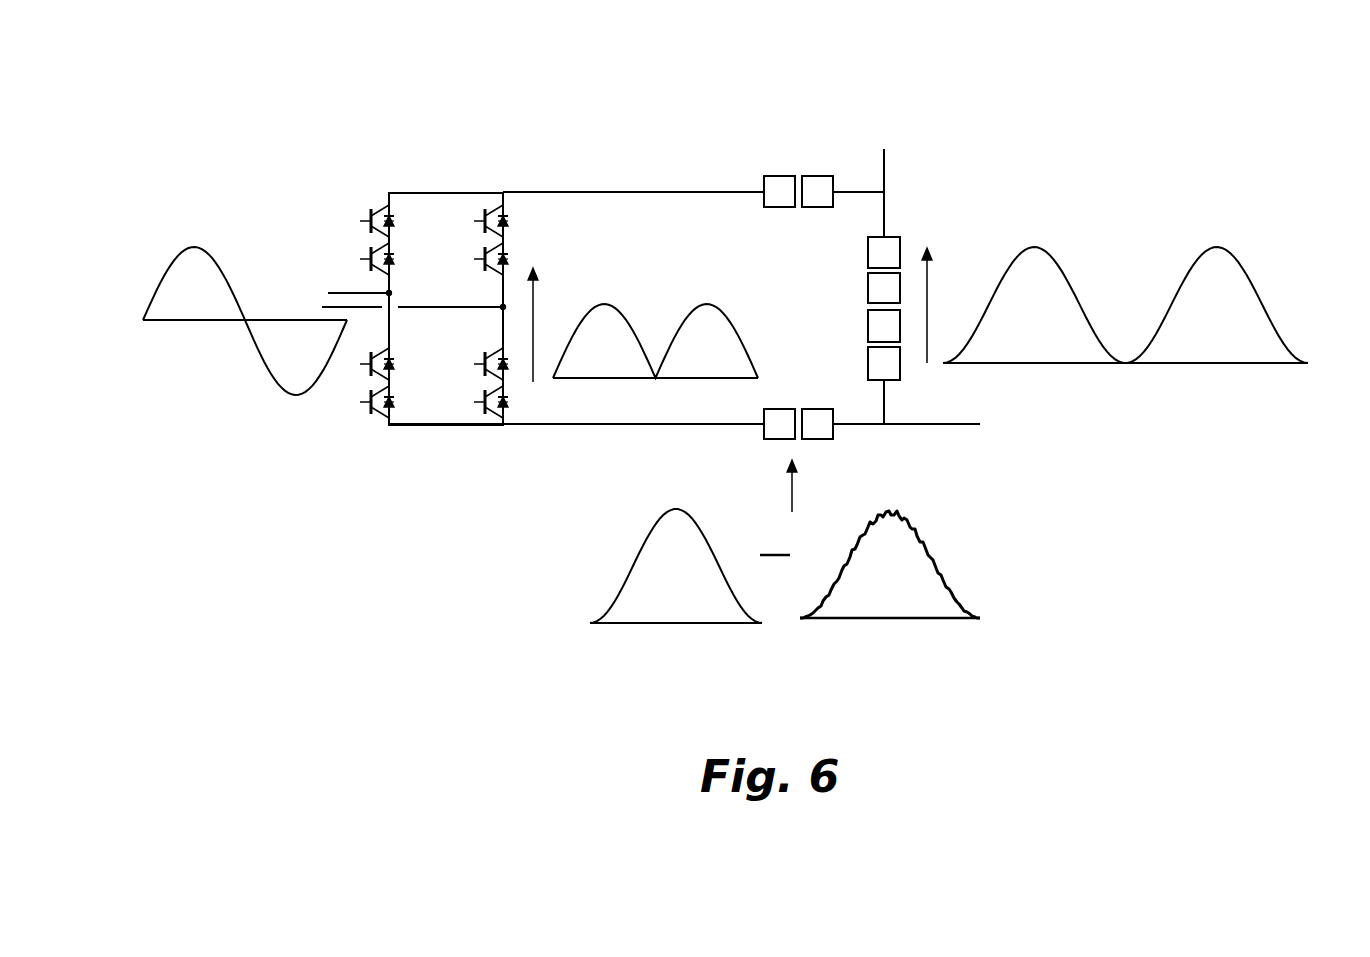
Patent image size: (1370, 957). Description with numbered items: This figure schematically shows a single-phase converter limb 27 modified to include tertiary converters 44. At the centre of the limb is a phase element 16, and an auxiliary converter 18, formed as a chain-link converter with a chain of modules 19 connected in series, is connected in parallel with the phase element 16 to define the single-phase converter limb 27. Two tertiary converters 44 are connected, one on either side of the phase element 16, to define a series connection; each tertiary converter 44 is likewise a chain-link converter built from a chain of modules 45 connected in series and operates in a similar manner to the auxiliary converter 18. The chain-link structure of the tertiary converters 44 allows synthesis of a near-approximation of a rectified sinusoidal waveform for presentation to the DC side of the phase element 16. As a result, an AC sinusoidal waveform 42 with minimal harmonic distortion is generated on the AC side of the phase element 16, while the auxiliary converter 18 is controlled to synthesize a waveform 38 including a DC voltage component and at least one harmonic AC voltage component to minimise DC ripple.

The phase element 16 is at (421, 441).
The auxiliary converter 18 is at (910, 238).
The modules 19 is at (886, 362).
The single-phase converter limb 27 is at (556, 142).
The waveform 38 is at (1063, 263).
The AC sinusoidal waveform 42 is at (207, 321).
The tertiary converter 44 is at (861, 266).
The modules 45 is at (816, 194).